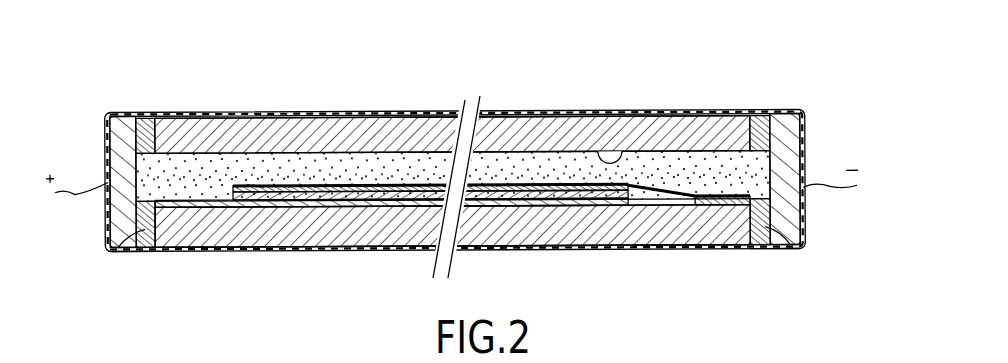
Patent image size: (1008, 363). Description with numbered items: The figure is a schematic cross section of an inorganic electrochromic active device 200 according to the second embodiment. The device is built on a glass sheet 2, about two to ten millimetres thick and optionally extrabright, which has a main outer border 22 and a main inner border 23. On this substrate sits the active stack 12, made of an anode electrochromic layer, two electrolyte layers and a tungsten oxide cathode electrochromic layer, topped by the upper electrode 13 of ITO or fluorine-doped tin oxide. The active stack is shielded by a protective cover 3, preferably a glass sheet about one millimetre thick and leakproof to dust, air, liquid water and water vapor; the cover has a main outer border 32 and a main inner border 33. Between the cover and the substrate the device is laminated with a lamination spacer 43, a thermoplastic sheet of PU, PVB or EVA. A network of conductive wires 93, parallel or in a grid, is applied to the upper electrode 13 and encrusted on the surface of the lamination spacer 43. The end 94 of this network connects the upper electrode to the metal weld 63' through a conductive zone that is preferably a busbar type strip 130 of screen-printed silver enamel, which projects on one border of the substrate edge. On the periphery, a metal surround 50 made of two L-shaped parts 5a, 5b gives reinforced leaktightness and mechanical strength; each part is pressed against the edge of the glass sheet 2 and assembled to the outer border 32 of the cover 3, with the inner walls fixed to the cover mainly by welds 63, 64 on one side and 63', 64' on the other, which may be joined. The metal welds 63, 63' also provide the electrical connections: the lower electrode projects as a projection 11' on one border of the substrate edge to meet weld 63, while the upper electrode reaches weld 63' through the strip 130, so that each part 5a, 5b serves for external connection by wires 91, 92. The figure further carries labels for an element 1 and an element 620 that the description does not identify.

The active device 200 is at (453, 172).
The metal surround 50 is at (108, 130).
The first part of the surround 5a is at (125, 116).
The second part of the surround 5b is at (786, 112).
The weld 64 is at (170, 148).
The weld 64' is at (747, 146).
The protective cover 3 is at (511, 126).
The main outer border of the cover 32 is at (573, 115).
The main inner border of the cover 33 is at (620, 151).
The lamination spacer 43 is at (368, 160).
The glass sheet 2 is at (512, 230).
The main outer border of the glass sheet 22 is at (569, 243).
The main inner border of the glass sheet 23 is at (620, 207).
The network of conductive wires 93 is at (408, 206).
The electrode assembly 1 is at (392, 257).
The upper electrode 13 is at (318, 204).
The active stack 12 is at (350, 204).
The projection of the lower electrode 11' is at (193, 250).
The end of the network of wires 94 is at (705, 195).
The busbar type strip 130 is at (717, 201).
The connection wire 91 is at (74, 191).
The connection wire 92 is at (830, 184).
The metal weld 63 is at (101, 230).
The metal weld 63' is at (812, 226).
The casing bottom wall 620 is at (122, 251).